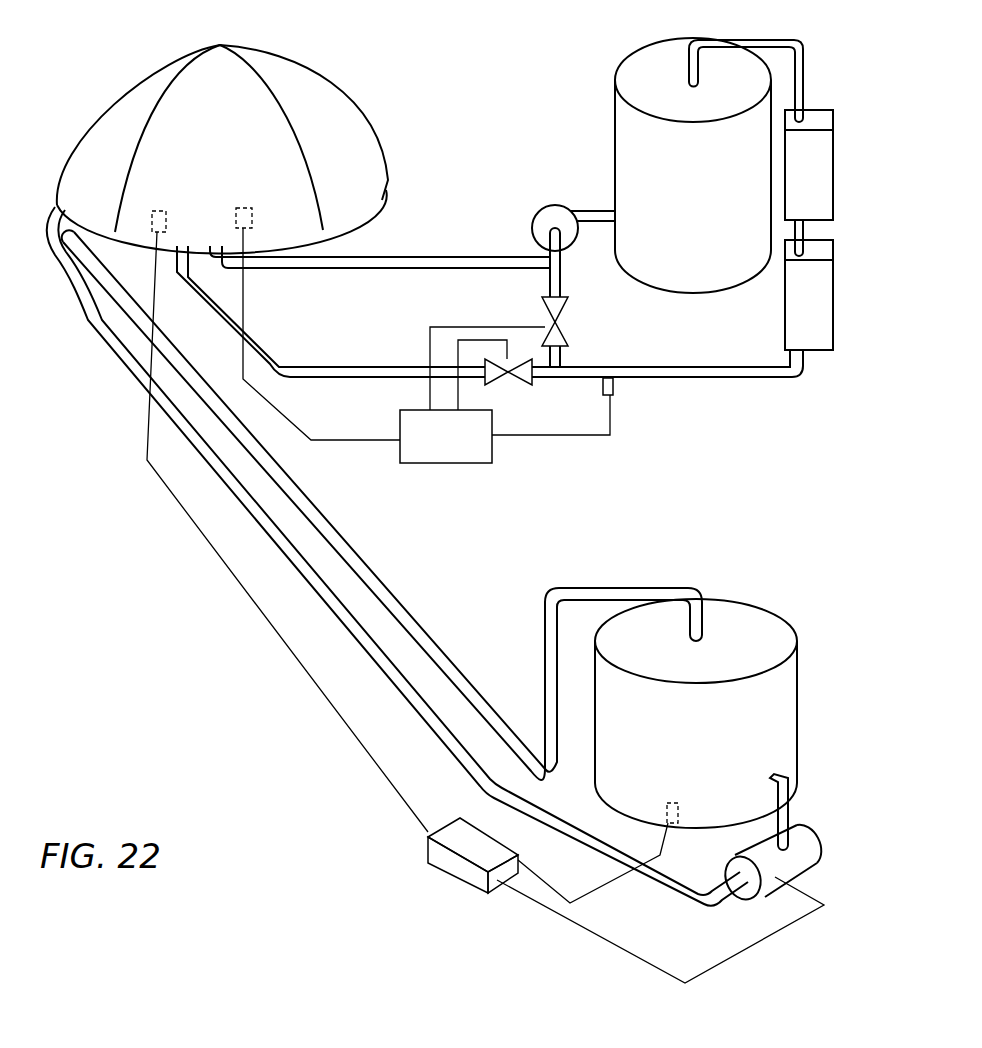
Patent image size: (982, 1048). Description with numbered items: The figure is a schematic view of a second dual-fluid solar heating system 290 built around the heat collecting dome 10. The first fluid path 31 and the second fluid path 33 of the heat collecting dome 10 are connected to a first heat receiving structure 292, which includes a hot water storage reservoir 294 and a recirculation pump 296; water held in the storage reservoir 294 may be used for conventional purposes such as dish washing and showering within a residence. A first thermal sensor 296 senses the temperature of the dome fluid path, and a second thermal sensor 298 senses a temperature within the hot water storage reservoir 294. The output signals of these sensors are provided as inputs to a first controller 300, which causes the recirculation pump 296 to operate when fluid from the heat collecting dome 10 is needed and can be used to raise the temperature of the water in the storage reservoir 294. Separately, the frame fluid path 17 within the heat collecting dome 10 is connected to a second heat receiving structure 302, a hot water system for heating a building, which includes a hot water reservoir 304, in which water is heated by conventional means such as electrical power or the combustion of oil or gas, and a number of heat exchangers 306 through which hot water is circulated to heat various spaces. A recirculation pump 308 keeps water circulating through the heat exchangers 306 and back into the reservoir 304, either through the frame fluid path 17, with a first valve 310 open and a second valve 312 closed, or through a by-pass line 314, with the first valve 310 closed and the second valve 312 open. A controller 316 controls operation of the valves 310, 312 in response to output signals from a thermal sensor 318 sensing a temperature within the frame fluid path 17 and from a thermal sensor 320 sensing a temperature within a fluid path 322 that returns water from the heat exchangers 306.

The heat collecting dome 10 is at (368, 124).
The frame fluid path 17 is at (200, 282).
The first fluid path 31 is at (70, 237).
The second fluid path 33 is at (52, 213).
The second dual-fluid solar heating system 290 is at (170, 684).
The first heat receiving structure 292 is at (560, 970).
The hot water storage reservoir 294 is at (743, 600).
The recirculation pump 296 is at (155, 220).
The second thermal sensor 298 is at (678, 810).
The first controller 300 is at (460, 882).
The second heat receiving structure 302 is at (556, 130).
The hot water reservoir 304 is at (612, 112).
The heat exchangers 306 is at (783, 310).
The recirculation pump 308 is at (542, 208).
The first valve 310 is at (505, 379).
The second valve 312 is at (562, 330).
The by-pass line 314 is at (548, 283).
The controller 316 is at (443, 465).
The thermal sensor 318 is at (252, 218).
The thermal sensor 320 is at (616, 393).
The fluid path 322 is at (735, 383).